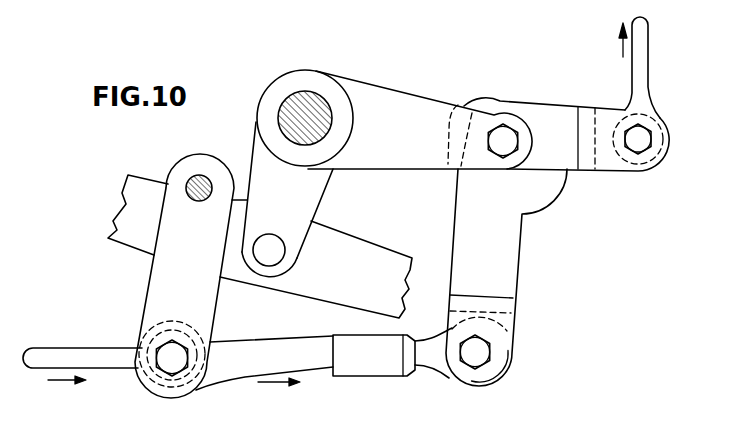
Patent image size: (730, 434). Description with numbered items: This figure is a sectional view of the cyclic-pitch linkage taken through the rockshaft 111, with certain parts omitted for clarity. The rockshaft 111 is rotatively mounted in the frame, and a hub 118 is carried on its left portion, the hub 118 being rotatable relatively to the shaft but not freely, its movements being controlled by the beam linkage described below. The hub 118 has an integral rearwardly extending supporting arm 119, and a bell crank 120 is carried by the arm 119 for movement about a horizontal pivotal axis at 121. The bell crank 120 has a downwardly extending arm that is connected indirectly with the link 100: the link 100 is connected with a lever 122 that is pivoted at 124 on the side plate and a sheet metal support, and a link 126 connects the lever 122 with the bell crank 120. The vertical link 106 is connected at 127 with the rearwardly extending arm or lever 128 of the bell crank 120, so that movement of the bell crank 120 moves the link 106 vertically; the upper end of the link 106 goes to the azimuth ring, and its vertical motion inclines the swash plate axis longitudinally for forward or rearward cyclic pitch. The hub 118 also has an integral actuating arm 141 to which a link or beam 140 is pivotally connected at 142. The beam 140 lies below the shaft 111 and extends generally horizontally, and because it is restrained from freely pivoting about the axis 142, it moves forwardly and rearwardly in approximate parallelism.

The link 100 is at (83, 353).
The vertical link 106 is at (645, 70).
The rockshaft 111 is at (283, 104).
The hub 118 is at (315, 80).
The supporting arm 119 is at (398, 98).
The bell crank 120 is at (452, 224).
The pivotal axis 121 is at (502, 140).
The lever 122 is at (158, 297).
The pivot 124 is at (192, 182).
The link 126 is at (290, 352).
The connection 127 is at (640, 139).
The rearwardly extending arm 128 is at (557, 112).
The beam 140 is at (388, 260).
The actuating arm 141 is at (313, 185).
The pivot 142 is at (270, 250).